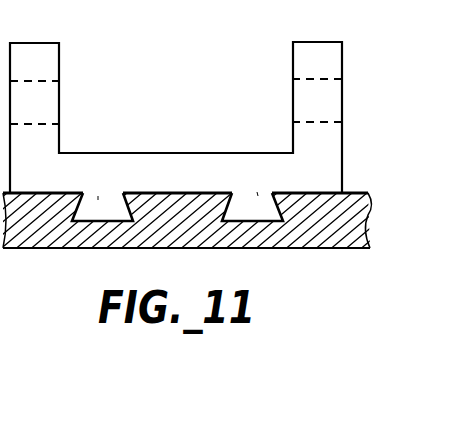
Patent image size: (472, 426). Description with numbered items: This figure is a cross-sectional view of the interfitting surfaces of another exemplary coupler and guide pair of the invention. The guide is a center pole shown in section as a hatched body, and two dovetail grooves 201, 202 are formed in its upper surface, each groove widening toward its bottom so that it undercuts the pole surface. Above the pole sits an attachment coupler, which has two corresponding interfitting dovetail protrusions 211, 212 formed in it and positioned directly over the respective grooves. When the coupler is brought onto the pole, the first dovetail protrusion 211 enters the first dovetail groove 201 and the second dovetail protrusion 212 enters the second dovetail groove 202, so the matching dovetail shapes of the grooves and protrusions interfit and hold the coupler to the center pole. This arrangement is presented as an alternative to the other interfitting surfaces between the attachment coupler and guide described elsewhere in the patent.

The dovetail groove 201 is at (72, 221).
The dovetail groove 202 is at (223, 221).
The dovetail protrusion 211 is at (98, 200).
The dovetail protrusion 212 is at (258, 196).